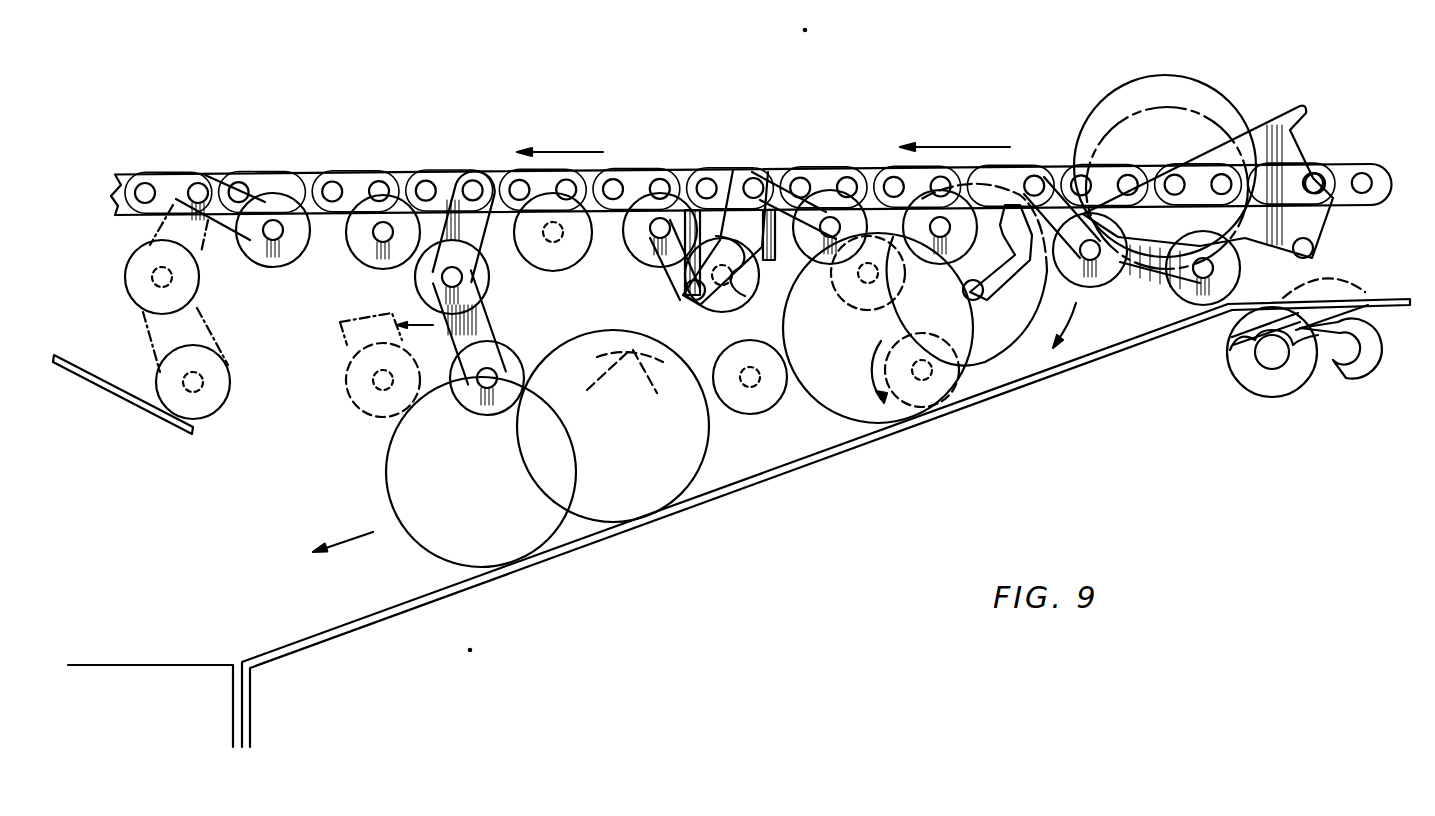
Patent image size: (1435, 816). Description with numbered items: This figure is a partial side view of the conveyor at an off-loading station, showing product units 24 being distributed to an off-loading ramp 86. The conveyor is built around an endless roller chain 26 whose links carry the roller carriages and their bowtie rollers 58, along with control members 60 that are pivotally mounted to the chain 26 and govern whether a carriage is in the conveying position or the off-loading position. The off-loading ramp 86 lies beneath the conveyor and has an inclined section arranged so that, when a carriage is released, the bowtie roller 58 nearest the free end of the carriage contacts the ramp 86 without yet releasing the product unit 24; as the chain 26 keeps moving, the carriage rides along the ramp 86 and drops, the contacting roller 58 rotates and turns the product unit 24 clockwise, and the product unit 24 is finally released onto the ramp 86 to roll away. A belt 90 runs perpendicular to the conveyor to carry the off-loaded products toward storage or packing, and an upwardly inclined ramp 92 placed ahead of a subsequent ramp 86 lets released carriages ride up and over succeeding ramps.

The product unit 24 is at (683, 492).
The endless roller chain 26 is at (838, 165).
The bowtie roller 58 is at (493, 360).
The control member 60 is at (1290, 118).
The off-loading ramp 86 is at (1392, 298).
The belt 90 is at (164, 664).
The upwardly inclined ramp 92 is at (122, 395).